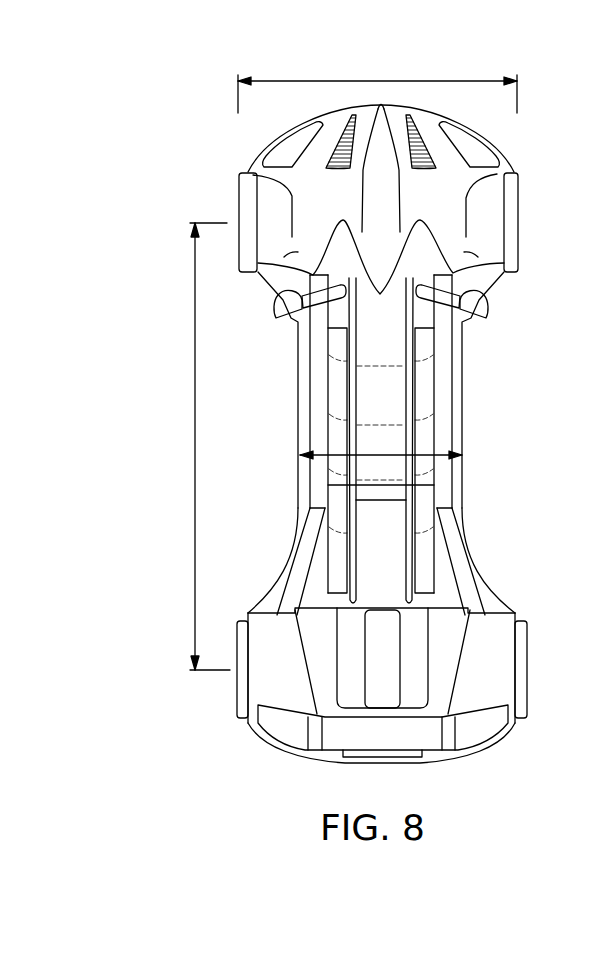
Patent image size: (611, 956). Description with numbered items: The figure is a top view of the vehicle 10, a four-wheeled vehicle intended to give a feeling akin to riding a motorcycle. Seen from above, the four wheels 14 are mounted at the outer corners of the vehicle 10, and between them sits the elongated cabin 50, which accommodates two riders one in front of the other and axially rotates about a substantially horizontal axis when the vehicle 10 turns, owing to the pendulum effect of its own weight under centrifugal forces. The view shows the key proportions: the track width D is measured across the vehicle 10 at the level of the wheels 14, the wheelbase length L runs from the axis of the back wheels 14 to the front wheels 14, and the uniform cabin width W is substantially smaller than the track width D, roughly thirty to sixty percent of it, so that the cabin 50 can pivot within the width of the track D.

The vehicle 10 is at (412, 434).
The wheels 14 is at (518, 198).
The cabin 50 is at (427, 378).
The track width D is at (381, 81).
The wheelbase length L is at (195, 445).
The cabin width W is at (422, 447).